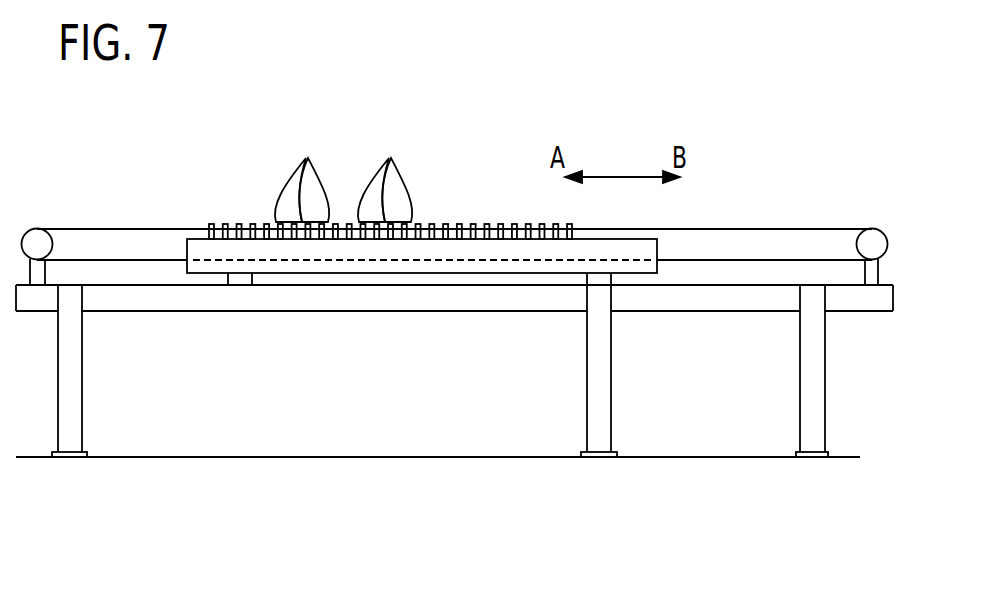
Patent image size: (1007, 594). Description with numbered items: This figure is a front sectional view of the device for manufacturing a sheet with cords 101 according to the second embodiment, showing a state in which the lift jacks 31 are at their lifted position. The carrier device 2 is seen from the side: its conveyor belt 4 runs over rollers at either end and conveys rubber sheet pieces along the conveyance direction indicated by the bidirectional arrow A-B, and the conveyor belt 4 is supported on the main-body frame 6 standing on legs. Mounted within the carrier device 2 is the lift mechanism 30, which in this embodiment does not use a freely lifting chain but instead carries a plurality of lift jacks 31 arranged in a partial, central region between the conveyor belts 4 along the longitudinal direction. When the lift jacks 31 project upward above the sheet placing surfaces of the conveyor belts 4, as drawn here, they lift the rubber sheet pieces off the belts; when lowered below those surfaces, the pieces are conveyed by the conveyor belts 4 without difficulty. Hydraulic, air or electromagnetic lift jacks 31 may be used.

The carrier device 2 is at (151, 230).
The conveyor belt 4 is at (92, 229).
The main-body frame 6 is at (27, 292).
The lift mechanism 30 is at (194, 274).
The lift jack 31 is at (343, 172).
The device for manufacturing a sheet with cords 101 is at (487, 204).